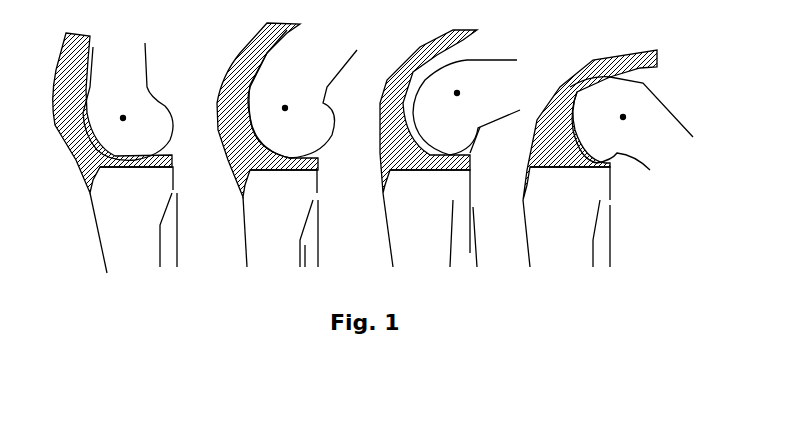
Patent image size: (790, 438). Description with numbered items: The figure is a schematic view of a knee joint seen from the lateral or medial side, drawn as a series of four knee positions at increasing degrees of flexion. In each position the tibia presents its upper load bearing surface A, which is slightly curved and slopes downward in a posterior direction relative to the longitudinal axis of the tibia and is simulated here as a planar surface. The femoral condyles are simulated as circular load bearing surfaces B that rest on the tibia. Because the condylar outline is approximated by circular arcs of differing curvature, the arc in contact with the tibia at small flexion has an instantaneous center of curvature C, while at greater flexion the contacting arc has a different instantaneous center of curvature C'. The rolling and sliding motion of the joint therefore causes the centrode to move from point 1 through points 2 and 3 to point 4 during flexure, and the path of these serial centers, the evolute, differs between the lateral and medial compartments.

The point 1 is at (115, 153).
The point 2 is at (287, 145).
The point 3 is at (450, 148).
The point 4 is at (608, 158).
The tibia load bearing surface A is at (523, 303).
The femoral condylar load bearing surface B is at (137, 153).
The instantaneous center of curvature C is at (214, 108).
The instantaneous center of curvature C' is at (553, 106).